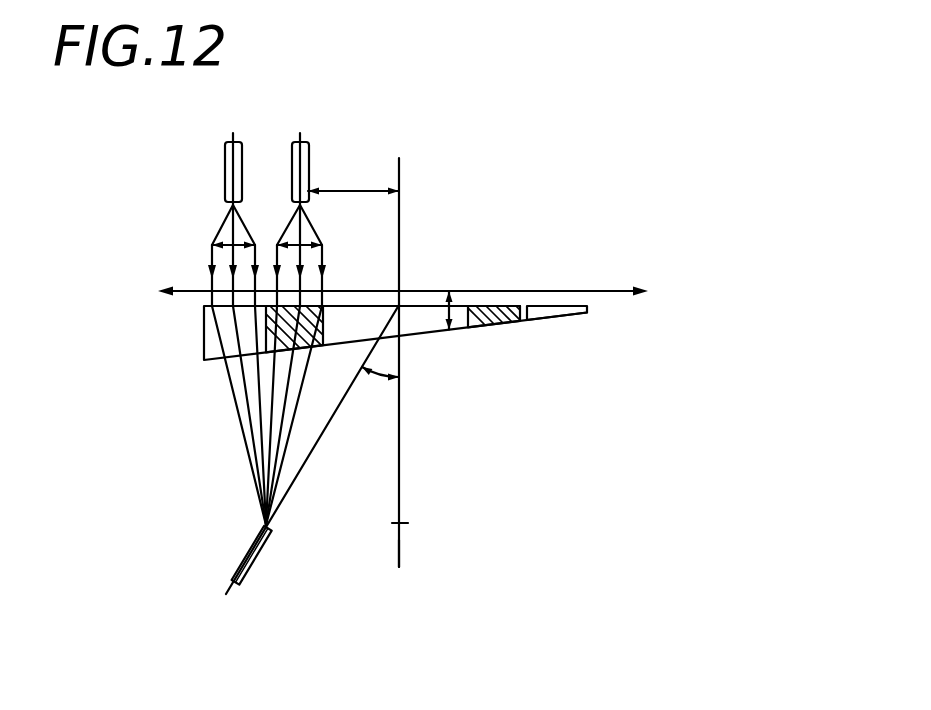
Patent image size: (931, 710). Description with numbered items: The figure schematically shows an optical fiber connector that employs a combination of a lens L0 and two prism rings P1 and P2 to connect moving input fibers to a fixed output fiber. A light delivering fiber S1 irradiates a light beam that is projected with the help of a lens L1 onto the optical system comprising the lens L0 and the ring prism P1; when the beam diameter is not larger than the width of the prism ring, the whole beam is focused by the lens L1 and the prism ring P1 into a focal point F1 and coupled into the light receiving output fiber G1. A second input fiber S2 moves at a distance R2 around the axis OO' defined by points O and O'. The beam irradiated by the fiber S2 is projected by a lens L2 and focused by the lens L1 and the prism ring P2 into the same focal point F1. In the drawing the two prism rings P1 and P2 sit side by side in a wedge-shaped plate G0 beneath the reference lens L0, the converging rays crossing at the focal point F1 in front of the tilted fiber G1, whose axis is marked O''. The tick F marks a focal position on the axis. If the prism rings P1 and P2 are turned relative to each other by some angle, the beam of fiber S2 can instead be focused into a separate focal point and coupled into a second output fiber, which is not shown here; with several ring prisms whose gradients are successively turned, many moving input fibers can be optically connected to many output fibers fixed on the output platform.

The light delivering fiber S1 is at (217, 219).
The second input fiber S2 is at (285, 219).
The lens L1 is at (216, 242).
The lens L2 is at (320, 242).
The distance R2 is at (353, 173).
The axis O is at (416, 354).
The lens L0 is at (403, 267).
The wedge-shaped optical plate G0 is at (395, 330).
The prism ring P1 is at (560, 340).
The prism ring P2 is at (500, 345).
The focal point F1 is at (269, 392).
The light receiving fiber G1 is at (278, 559).
The focal point on optical axis F is at (411, 522).
The axis O' is at (420, 572).
The tilted axis O'' is at (312, 463).